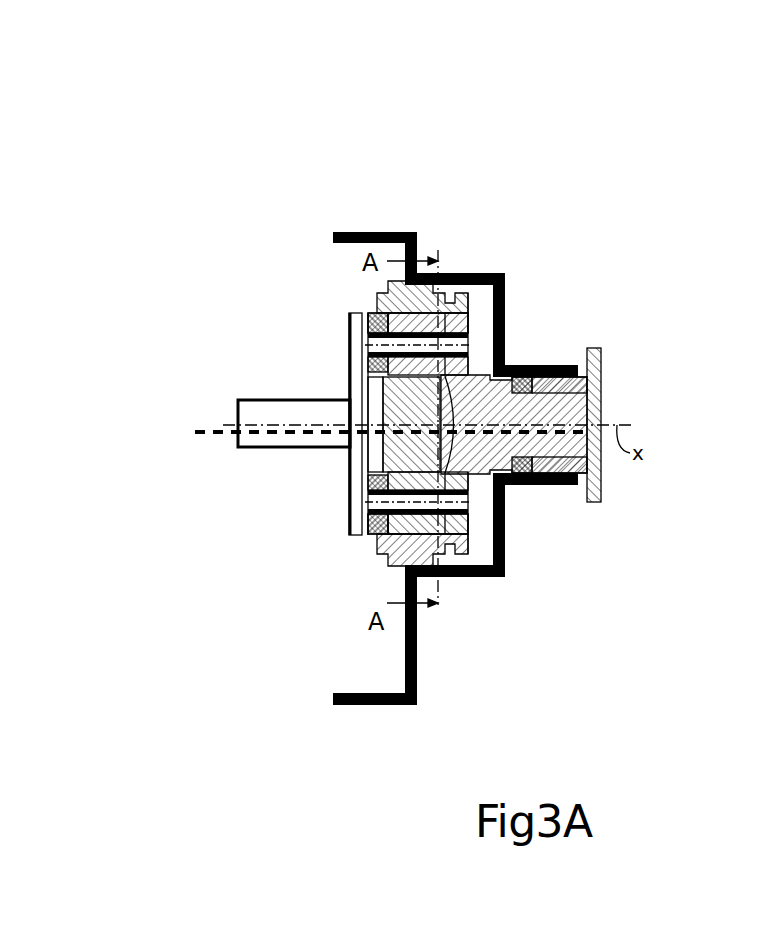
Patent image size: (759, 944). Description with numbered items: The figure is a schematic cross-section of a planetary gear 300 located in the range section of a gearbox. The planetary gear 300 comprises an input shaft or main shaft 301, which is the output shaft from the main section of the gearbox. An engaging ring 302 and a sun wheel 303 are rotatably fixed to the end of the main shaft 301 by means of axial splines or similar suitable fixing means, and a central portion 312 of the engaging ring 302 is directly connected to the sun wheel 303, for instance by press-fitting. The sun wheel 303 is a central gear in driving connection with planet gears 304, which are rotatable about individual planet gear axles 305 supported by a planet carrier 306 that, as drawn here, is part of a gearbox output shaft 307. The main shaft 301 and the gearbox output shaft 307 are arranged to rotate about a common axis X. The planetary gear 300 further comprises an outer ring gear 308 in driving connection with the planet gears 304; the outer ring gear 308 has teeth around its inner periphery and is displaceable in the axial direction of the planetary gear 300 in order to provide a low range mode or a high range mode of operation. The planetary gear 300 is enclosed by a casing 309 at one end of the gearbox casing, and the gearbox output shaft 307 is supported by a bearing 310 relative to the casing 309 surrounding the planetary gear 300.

The planetary gear 300 is at (485, 173).
The main shaft 301 is at (250, 410).
The engaging ring 302 is at (357, 537).
The sun wheel 303 is at (457, 463).
The planet gears 304 is at (364, 312).
The planet gear axles 305 is at (467, 318).
The planet carrier 306 is at (507, 363).
The gearbox output shaft 307 is at (590, 412).
The outer ring gear 308 is at (390, 280).
The casing 309 is at (384, 232).
The bearing 310 is at (563, 488).
The central portion 312 is at (375, 398).